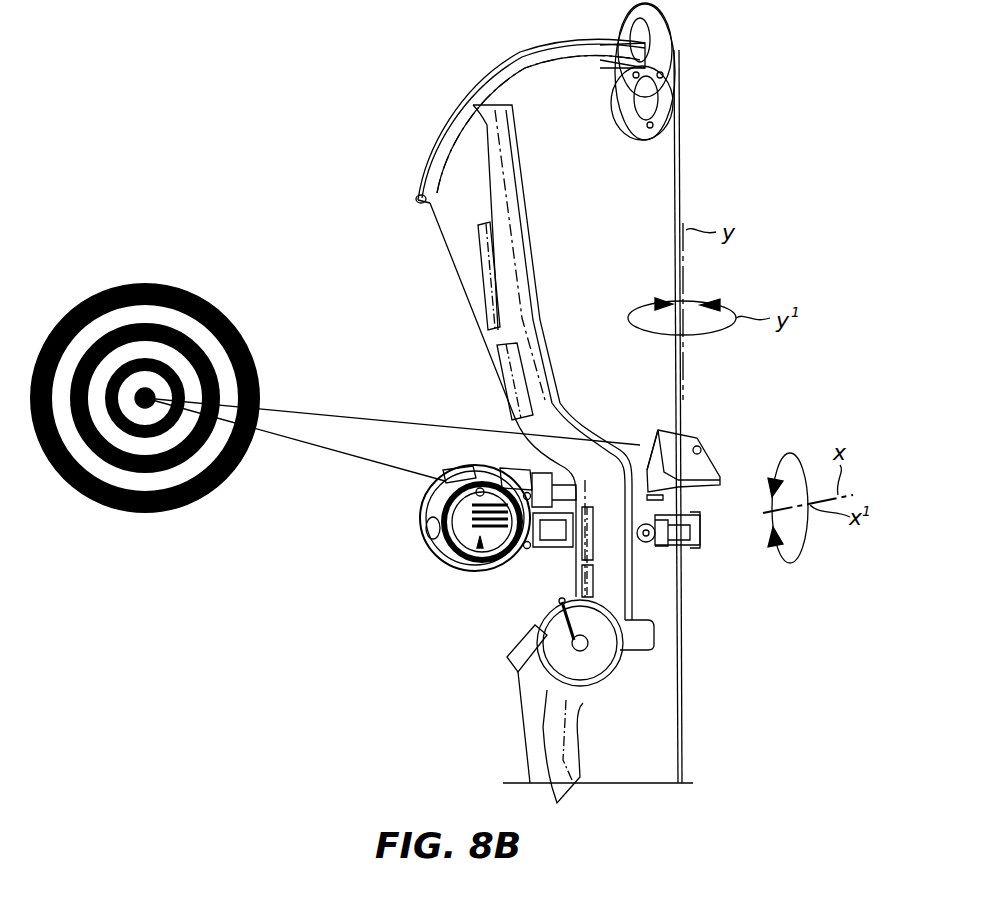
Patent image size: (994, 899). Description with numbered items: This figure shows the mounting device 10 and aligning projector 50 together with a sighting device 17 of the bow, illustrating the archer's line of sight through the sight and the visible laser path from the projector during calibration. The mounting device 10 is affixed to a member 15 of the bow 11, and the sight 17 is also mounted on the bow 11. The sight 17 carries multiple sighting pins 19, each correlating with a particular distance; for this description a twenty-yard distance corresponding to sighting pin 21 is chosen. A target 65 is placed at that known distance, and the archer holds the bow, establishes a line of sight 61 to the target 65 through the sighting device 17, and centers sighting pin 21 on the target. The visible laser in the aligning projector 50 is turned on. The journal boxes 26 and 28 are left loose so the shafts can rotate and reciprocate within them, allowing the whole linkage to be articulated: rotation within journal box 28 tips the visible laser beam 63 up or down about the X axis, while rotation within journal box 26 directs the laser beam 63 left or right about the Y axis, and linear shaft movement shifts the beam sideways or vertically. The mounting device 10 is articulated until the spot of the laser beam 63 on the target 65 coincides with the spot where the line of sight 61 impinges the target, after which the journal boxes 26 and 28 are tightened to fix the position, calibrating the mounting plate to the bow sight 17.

The mounting device 10 is at (713, 554).
The bow 11 is at (556, 232).
The member 15 is at (640, 622).
The sighting device 17 is at (392, 534).
The sighting pins 19 is at (473, 572).
The sighting pin 21 is at (433, 553).
The journal box 26 is at (703, 523).
The journal box 28 is at (653, 543).
The aligning projector 50 is at (712, 445).
The line of sight 61 is at (301, 447).
The visible laser beam 63 is at (377, 418).
The target 65 is at (148, 393).